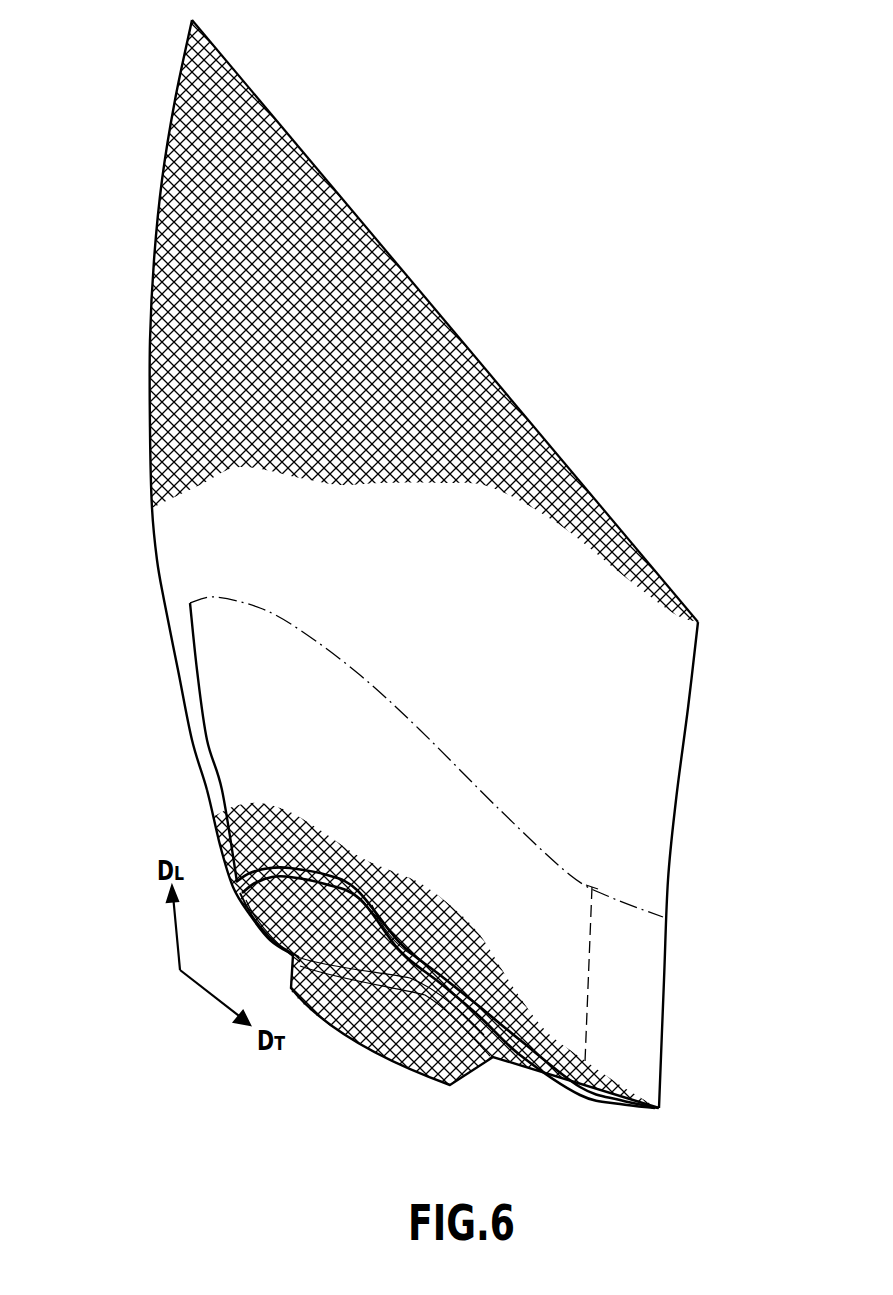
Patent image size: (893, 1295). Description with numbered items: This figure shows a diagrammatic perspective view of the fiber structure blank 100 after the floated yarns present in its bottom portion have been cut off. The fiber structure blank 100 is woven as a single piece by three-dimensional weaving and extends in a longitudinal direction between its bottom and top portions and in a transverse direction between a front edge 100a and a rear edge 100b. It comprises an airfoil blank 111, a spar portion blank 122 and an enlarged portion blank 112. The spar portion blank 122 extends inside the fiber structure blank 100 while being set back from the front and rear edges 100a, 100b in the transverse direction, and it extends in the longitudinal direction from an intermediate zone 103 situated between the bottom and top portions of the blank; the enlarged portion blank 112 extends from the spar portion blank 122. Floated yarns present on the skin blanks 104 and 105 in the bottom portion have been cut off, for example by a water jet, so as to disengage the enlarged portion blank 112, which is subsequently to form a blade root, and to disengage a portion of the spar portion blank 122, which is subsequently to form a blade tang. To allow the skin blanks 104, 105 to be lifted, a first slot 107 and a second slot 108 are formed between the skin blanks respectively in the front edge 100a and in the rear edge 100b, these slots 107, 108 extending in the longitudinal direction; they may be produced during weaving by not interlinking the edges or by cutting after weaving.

The fiber structure blank 100 is at (108, 88).
The front edge 100a is at (158, 560).
The rear edge 100b is at (689, 708).
The intermediate zone 103 is at (464, 808).
The skin blank 104 is at (223, 720).
The skin blank 105 is at (210, 796).
The first slot 107 is at (196, 666).
The second slot 108 is at (663, 1037).
The airfoil blank 111 is at (392, 305).
The enlarged portion blank 112 is at (386, 1028).
The spar portion blank 122 is at (372, 905).